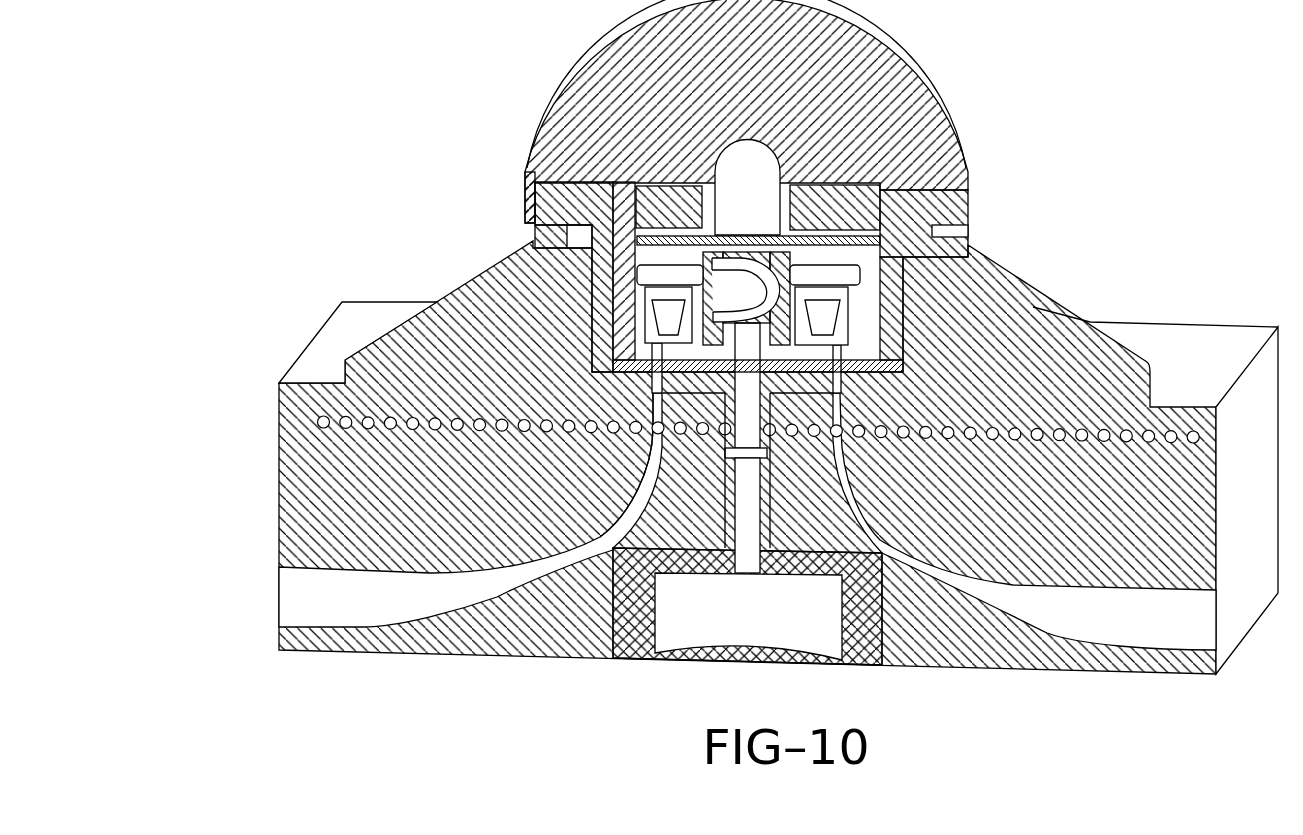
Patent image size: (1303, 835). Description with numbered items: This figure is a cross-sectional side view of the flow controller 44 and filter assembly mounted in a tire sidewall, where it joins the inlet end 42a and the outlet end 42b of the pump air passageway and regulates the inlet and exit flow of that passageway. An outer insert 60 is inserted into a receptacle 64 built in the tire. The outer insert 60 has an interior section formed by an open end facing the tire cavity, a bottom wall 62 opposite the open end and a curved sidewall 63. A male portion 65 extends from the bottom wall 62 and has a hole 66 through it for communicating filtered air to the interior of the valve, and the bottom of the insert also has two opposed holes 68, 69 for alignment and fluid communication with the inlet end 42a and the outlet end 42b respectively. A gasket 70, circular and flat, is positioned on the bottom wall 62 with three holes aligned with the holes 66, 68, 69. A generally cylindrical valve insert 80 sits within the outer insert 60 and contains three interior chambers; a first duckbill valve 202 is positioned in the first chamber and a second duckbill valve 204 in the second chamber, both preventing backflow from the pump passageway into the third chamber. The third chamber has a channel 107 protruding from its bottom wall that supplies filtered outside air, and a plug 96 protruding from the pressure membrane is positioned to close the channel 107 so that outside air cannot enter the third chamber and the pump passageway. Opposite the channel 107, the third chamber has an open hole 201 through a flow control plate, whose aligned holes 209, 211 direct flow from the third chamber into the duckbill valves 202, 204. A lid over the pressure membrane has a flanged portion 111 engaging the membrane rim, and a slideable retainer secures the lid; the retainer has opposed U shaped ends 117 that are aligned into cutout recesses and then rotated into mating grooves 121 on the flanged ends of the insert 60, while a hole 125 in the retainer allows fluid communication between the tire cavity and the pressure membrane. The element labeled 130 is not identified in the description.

The flow controller 44 is at (381, 152).
The outer insert 60 is at (567, 190).
The U shaped ends 117 is at (527, 195).
The hole 209 is at (658, 262).
The grooves 121 is at (533, 233).
The receptacle 64 is at (437, 302).
The valve insert 80 is at (628, 303).
The first duckbill valve 202 is at (667, 317).
The hole 125 is at (762, 182).
The flanged portion 111 is at (830, 207).
The open hole 201 is at (837, 263).
The hole 211 is at (932, 228).
The second duckbill valve 204 is at (823, 320).
The curved sidewall 63 is at (905, 312).
The gasket 70 is at (863, 368).
The plug 96 is at (748, 282).
The channel 107 is at (745, 335).
The bottom wall 62 is at (623, 383).
The hole 68 is at (645, 385).
The hole 69 is at (838, 385).
The hole 66 is at (747, 427).
The male portion 65 is at (767, 440).
The inlet end 42a is at (293, 595).
The outlet end 42b is at (1202, 620).
The bottom block 130 is at (628, 620).